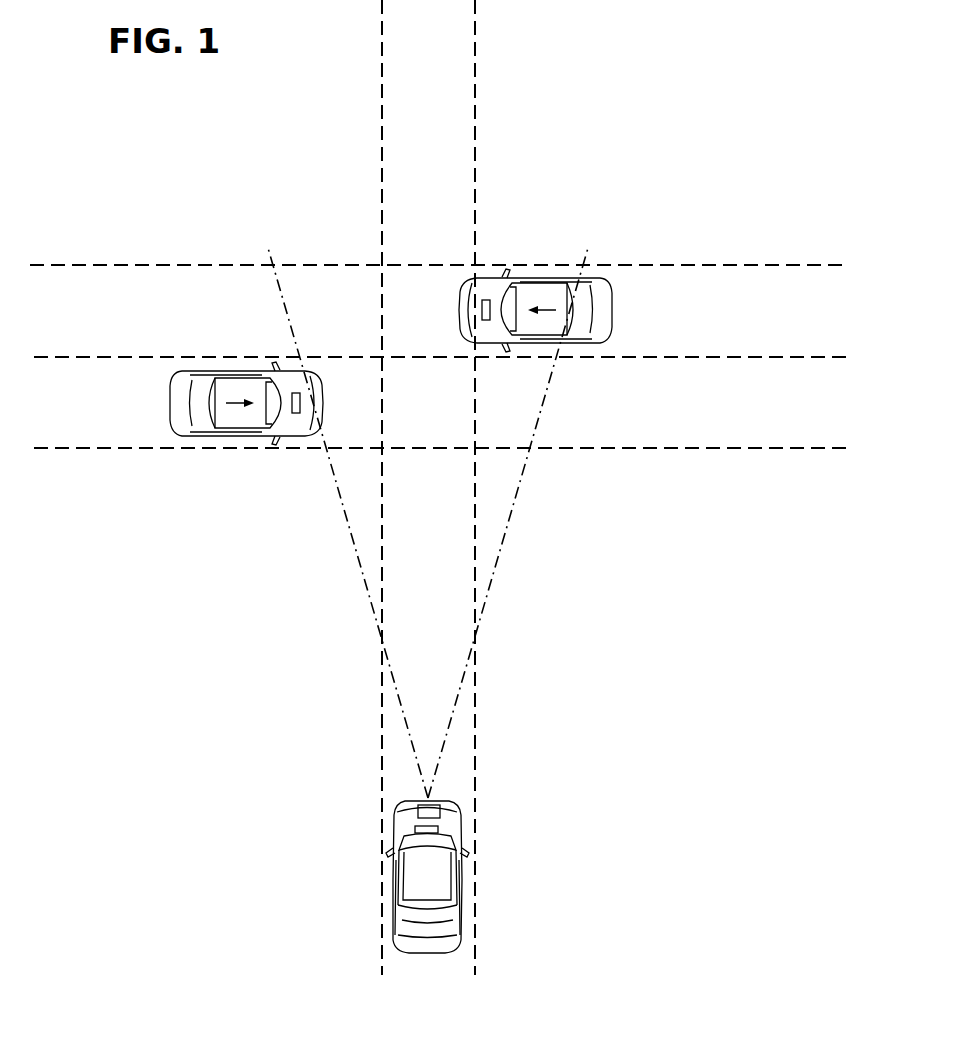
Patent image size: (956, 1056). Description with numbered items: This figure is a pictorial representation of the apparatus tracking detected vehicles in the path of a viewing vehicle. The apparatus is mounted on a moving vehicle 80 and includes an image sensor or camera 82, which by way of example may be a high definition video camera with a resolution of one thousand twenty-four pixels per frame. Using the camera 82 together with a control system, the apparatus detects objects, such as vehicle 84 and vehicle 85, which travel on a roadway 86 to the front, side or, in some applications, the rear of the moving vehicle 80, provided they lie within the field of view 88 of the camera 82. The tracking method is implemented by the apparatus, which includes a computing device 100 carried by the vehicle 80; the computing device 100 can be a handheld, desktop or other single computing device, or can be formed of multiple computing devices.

The moving vehicle 80 is at (466, 869).
The image sensor or camera 82 is at (408, 803).
The vehicle 84 is at (232, 411).
The vehicle 85 is at (540, 300).
The roadway 86 is at (393, 735).
The field of view 88 is at (482, 613).
The computing device 100 is at (427, 834).